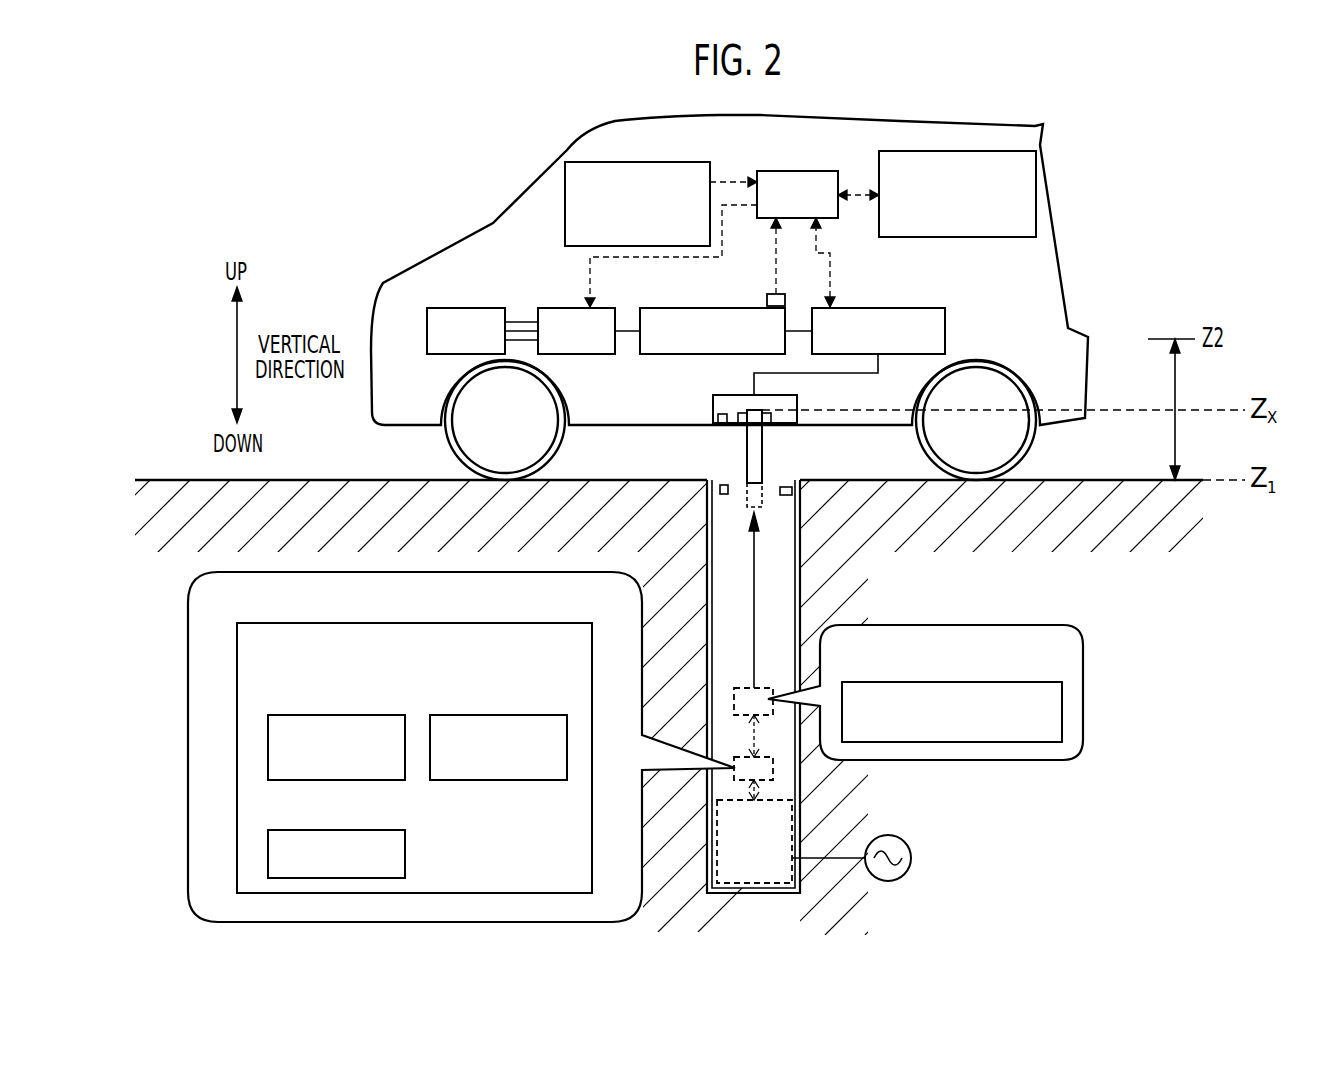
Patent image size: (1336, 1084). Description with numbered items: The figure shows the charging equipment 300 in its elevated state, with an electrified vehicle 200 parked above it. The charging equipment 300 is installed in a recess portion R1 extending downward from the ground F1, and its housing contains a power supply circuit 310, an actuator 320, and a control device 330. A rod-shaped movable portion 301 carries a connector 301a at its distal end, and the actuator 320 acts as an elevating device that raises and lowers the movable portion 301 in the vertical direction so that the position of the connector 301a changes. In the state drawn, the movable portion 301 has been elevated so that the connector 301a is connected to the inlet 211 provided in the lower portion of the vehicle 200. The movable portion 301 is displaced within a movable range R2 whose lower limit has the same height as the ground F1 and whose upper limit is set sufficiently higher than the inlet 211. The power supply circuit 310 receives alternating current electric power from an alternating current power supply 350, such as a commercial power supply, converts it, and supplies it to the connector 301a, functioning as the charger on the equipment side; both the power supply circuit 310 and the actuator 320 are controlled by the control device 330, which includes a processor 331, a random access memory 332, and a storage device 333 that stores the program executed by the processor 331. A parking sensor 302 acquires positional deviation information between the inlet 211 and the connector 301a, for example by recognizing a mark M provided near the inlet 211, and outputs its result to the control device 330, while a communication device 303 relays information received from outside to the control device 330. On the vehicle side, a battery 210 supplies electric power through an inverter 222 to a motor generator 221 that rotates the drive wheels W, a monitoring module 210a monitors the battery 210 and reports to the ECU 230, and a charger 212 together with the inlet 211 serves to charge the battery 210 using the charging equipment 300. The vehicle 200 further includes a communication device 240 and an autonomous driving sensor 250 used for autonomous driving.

The vehicle 200 is at (757, 117).
The autonomous driving sensor 250 is at (608, 162).
The communication device 240 is at (1001, 150).
The ECU 230 is at (777, 171).
The motor generator 221 is at (466, 307).
The inverter 222 is at (551, 307).
The battery 210 is at (676, 307).
The monitoring module 210a is at (771, 294).
The charger 212 is at (882, 307).
The inlet 211 is at (755, 418).
The mark M is at (720, 414).
The drive wheels W is at (452, 431).
The ground F1 is at (278, 474).
The recess portion R1 is at (787, 513).
The movable range R2 is at (1164, 409).
The charging equipment 300 is at (803, 778).
The movable portion 301 is at (800, 556).
The connector 301a is at (752, 404).
The parking sensor 302 is at (724, 494).
The communication device 303 is at (788, 487).
The power supply circuit 310 is at (753, 888).
The actuator 320 is at (998, 681).
The control device 330 is at (508, 622).
The processor 331 is at (343, 714).
The random access memory 332 is at (343, 829).
The storage device 333 is at (505, 714).
The alternating current power supply 350 is at (912, 862).